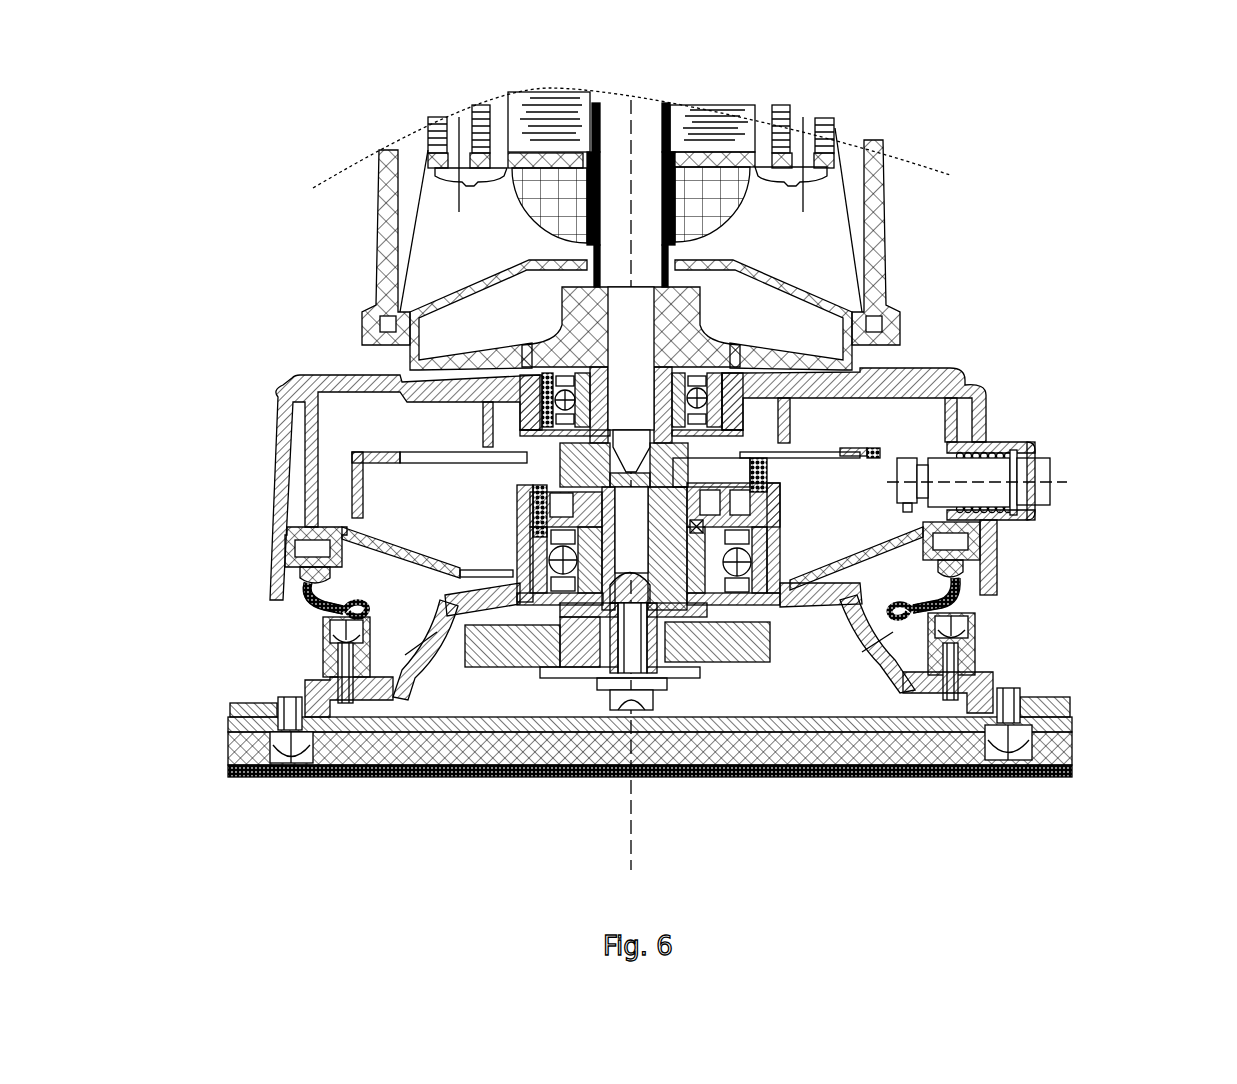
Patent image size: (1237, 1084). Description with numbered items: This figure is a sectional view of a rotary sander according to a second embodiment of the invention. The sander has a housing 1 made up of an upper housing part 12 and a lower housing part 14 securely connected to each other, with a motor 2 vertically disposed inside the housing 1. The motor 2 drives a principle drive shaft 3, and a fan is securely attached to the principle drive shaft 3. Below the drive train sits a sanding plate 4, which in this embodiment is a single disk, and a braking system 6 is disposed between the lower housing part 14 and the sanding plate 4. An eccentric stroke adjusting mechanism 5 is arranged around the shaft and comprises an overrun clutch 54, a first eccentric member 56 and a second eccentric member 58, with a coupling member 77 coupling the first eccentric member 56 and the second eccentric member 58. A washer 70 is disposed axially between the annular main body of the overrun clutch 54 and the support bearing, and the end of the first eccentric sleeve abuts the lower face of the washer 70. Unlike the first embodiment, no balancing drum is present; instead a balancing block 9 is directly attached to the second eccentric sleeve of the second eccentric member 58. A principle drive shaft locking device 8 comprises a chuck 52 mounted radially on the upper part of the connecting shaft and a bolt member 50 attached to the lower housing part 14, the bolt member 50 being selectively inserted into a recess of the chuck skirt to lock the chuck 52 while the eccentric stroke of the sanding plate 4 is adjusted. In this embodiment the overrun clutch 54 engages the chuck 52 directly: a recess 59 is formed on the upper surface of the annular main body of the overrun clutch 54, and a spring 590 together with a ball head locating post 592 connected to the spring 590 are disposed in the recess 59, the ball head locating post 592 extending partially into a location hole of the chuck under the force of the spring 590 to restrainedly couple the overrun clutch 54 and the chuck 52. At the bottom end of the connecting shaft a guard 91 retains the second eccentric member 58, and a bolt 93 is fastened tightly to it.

The housing 1 is at (257, 325).
The upper housing part 12 is at (380, 231).
The lower housing part 14 is at (343, 377).
The motor 2 is at (700, 145).
The principle drive shaft 3 is at (643, 352).
The sanding plate 4 is at (477, 760).
The eccentric stroke adjusting mechanism 5 is at (777, 520).
The bolt member 50 is at (993, 495).
The chuck 52 is at (945, 450).
The overrun clutch 54 is at (707, 483).
The first eccentric member 56 is at (793, 563).
The second eccentric member 58 is at (527, 662).
The recess 59 is at (513, 485).
The spring 590 is at (530, 463).
The ball head locating post 592 is at (528, 442).
The braking system 6 is at (957, 598).
The washer 70 is at (442, 573).
The coupling member 77 is at (705, 612).
The principle drive shaft locking device 8 is at (1037, 458).
The balancing block 9 is at (763, 662).
The guard 91 is at (577, 677).
The bolt 93 is at (653, 672).